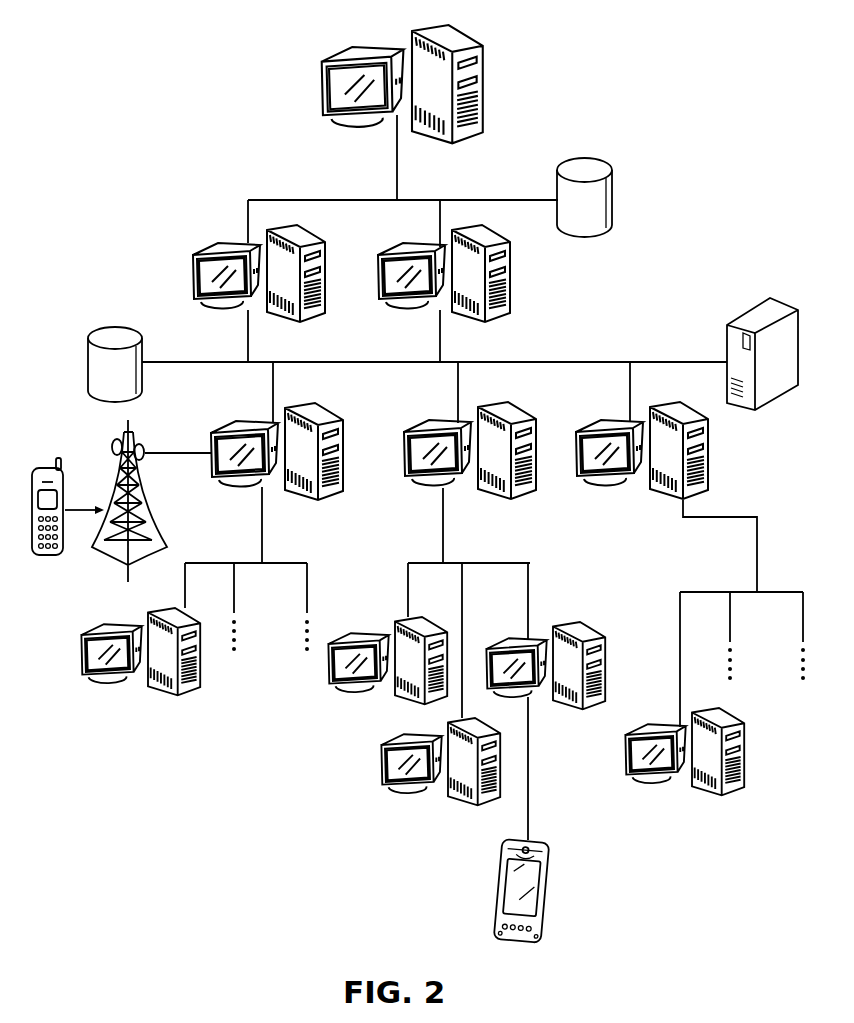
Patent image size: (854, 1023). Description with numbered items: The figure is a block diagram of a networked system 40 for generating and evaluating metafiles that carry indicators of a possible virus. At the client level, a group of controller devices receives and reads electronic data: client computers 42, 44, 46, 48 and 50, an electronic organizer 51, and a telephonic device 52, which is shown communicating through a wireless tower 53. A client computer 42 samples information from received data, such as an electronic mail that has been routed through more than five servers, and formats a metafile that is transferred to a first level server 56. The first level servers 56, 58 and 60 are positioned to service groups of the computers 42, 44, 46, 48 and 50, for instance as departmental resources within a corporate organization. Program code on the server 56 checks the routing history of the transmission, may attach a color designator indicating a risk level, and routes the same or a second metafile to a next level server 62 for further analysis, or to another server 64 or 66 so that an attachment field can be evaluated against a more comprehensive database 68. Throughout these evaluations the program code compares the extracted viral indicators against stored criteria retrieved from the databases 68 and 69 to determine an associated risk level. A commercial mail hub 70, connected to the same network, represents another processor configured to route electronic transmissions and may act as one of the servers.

The networked system 40 is at (650, 99).
The client computer 42 is at (377, 633).
The client computer 44 is at (396, 735).
The client computer 46 is at (516, 641).
The client computer 48 is at (666, 727).
The client computer 50 is at (98, 628).
The electronic organizer 51 is at (513, 840).
The telephonic device 52 is at (47, 470).
The wireless tower 53 is at (111, 489).
The first level server 56 is at (421, 425).
The first level server 58 is at (225, 425).
The first level server 60 is at (596, 425).
The next level server 62 is at (206, 248).
The server 64 is at (395, 248).
The server 66 is at (330, 45).
The database 68 is at (570, 160).
The database 69 is at (99, 327).
The commercial mail hub 70 is at (751, 307).